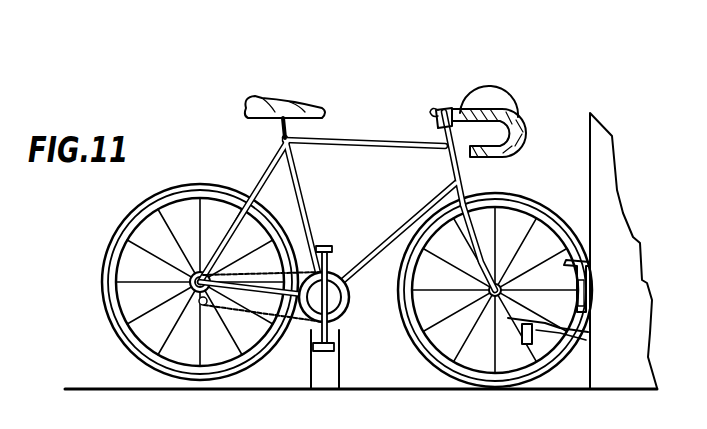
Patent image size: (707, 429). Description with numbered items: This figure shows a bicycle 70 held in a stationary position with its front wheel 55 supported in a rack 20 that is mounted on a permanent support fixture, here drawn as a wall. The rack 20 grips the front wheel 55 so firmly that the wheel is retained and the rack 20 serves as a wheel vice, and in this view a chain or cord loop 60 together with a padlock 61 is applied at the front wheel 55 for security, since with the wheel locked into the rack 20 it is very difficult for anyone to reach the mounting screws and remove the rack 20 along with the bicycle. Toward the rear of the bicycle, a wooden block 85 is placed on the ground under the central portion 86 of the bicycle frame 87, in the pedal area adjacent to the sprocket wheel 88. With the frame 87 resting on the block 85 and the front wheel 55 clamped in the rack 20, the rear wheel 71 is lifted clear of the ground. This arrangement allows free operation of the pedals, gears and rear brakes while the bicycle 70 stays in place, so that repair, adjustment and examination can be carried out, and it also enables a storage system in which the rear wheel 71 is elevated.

The bicycle 70 is at (513, 78).
The rear wheel 71 is at (188, 184).
The bicycle frame 87 is at (414, 212).
The front wheel 55 is at (517, 197).
The rack 20 is at (586, 260).
The loop 60 is at (548, 326).
The padlock 61 is at (536, 343).
The central portion of the bicycle frame 86 is at (333, 318).
The wooden block 85 is at (322, 372).
The sprocket wheel 88 is at (302, 340).